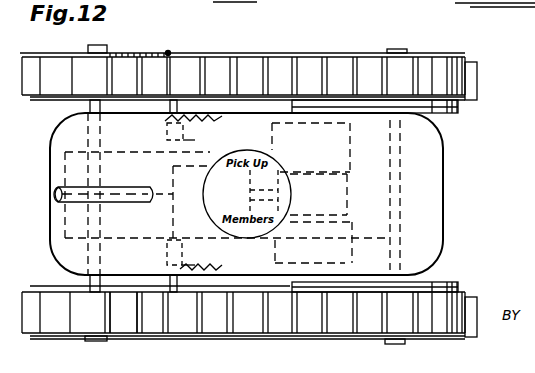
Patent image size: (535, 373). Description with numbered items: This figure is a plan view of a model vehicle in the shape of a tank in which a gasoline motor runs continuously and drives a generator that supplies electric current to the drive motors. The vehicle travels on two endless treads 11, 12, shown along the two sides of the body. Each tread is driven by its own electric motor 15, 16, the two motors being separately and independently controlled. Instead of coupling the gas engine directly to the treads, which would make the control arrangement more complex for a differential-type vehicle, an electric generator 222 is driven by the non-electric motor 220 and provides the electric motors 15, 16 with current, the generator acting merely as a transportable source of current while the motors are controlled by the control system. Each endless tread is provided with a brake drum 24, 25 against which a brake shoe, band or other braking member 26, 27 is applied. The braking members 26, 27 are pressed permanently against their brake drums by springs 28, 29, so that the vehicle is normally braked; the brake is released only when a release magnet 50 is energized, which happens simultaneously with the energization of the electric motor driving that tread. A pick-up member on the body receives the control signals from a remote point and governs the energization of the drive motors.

The endless tread 11 is at (272, 326).
The endless tread 12 is at (244, 63).
The electric motor 15 is at (345, 258).
The electric motor 16 is at (342, 153).
The brake drum 24 is at (128, 53).
The brake drum 25 is at (137, 333).
The braking member 26 is at (169, 52).
The braking member 27 is at (187, 339).
The spring 28 is at (208, 117).
The spring 29 is at (212, 270).
The release magnet 50 is at (237, 148).
The non-electric motor 220 is at (187, 218).
The electric generator 222 is at (337, 204).